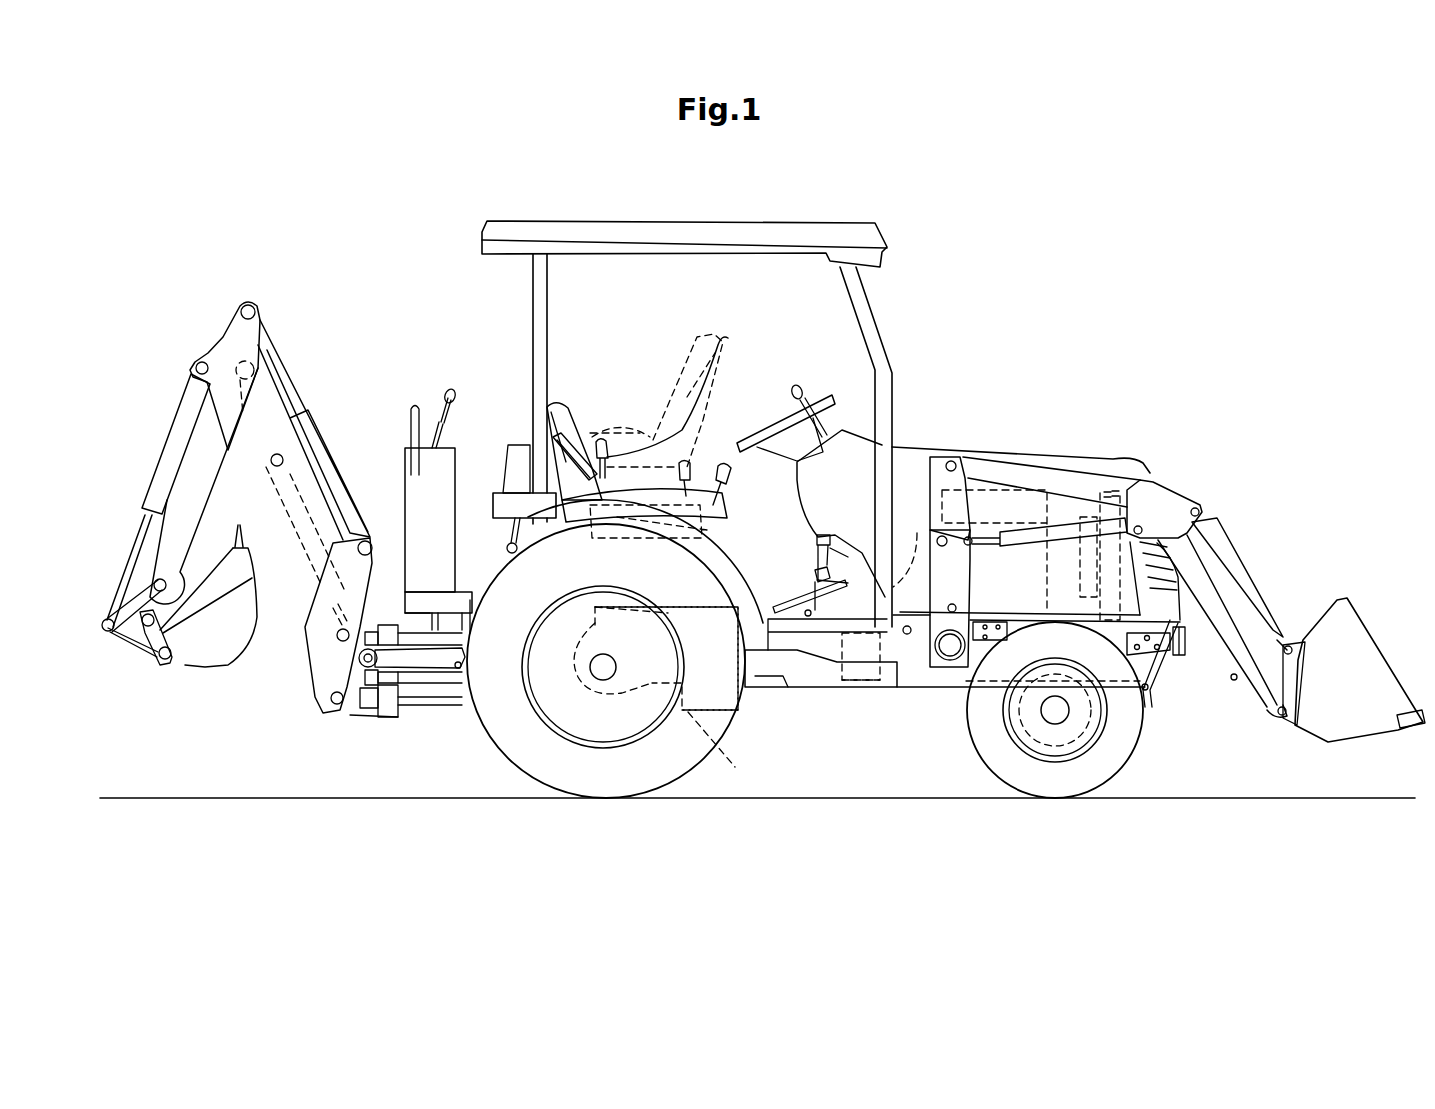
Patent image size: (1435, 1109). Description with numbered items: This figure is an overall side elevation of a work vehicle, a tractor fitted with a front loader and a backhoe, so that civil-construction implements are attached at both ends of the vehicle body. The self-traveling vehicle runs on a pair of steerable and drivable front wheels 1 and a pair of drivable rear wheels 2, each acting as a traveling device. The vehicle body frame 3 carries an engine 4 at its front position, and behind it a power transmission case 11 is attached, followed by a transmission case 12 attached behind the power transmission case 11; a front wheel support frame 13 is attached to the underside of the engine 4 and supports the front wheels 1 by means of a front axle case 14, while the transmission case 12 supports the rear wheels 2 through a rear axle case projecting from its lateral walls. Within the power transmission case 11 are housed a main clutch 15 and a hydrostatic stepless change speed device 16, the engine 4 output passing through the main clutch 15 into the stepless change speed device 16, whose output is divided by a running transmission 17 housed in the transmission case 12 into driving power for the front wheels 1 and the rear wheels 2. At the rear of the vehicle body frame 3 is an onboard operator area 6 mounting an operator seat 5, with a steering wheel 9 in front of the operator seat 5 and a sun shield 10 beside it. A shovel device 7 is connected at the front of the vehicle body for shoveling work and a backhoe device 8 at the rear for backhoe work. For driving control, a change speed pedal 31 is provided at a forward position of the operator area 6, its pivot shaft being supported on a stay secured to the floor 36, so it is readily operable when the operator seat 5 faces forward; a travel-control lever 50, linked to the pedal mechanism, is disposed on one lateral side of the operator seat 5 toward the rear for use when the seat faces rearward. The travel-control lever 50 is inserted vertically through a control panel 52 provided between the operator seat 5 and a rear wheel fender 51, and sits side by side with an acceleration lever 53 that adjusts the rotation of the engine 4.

The front wheels 1 is at (1055, 796).
The rear wheels 2 is at (597, 784).
The vehicle body frame 3 is at (932, 704).
The engine 4 is at (980, 475).
The operator seat 5 is at (565, 410).
The operator area 6 is at (741, 266).
The shovel device 7 is at (1331, 497).
The backhoe device 8 is at (201, 264).
The steering wheel 9 is at (812, 392).
The sun shield 10 is at (660, 222).
The power transmission case 11 is at (775, 688).
The transmission case 12 is at (691, 701).
The front wheel support frame 13 is at (1185, 657).
The front axle case 14 is at (1107, 730).
The main clutch 15 is at (1019, 572).
The hydrostatic stepless change speed device 16 is at (863, 680).
The running transmission 17 is at (666, 658).
The change speed pedal 31 is at (802, 597).
The floor 36 is at (835, 612).
The travel-control lever 50 is at (604, 440).
The rear wheel fender 51 is at (493, 502).
The control panel 52 is at (690, 494).
The acceleration lever 53 is at (556, 445).